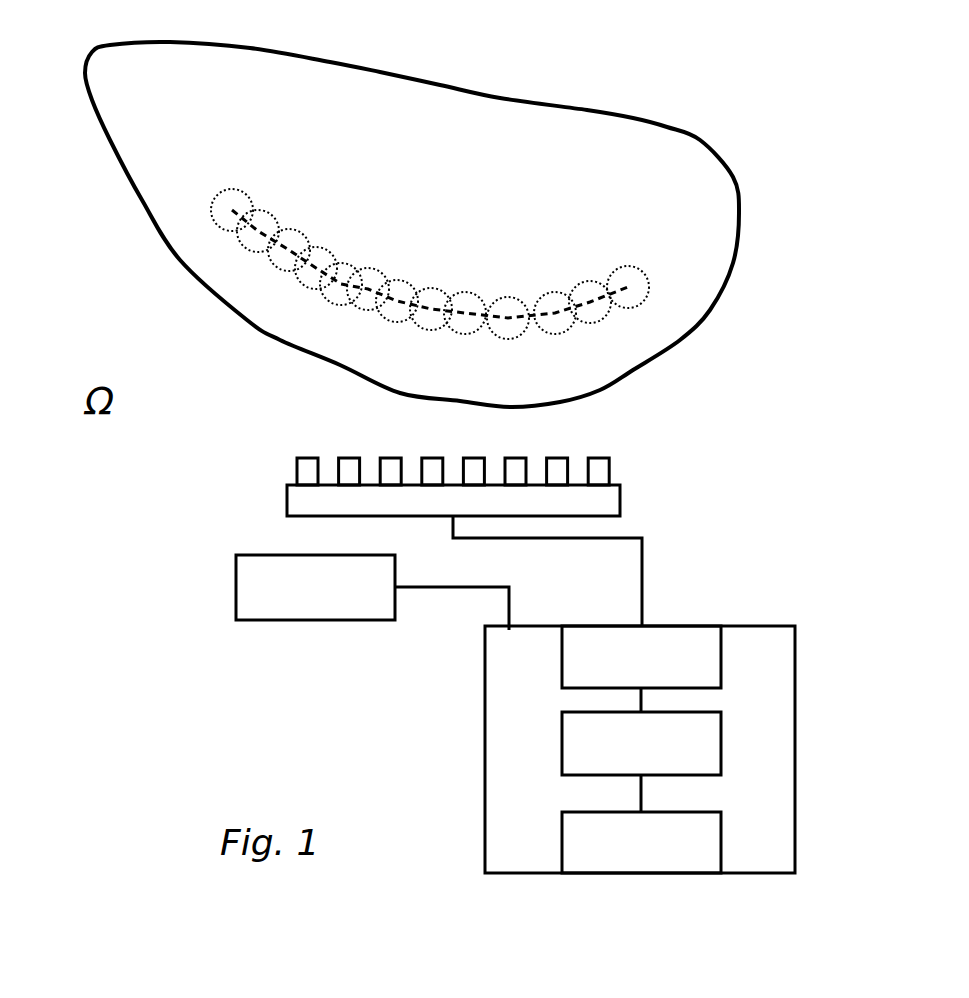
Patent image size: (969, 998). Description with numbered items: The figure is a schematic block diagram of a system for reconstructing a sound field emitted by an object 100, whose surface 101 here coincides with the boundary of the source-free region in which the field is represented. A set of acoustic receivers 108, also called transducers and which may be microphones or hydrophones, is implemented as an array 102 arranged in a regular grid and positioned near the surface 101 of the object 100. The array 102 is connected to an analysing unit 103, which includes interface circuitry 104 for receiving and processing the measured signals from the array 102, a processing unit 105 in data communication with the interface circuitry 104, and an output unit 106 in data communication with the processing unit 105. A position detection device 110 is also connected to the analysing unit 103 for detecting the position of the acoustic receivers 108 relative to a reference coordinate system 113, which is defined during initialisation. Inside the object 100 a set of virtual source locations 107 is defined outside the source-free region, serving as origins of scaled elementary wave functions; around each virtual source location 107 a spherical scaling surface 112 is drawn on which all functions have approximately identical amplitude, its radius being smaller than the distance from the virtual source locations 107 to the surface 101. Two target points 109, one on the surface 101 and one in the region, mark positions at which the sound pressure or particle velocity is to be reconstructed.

The object 100 is at (412, 214).
The surface 101 is at (179, 335).
The array 102 is at (501, 550).
The analysing unit 103 is at (580, 749).
The interface circuitry 104 is at (641, 669).
The processing unit 105 is at (641, 762).
The output unit 106 is at (641, 842).
The virtual source locations 107 is at (397, 301).
The acoustic receivers 108 is at (423, 458).
The target point 109 is at (377, 388).
The position detection device 110 is at (372, 592).
The spherical scaling surface 112 is at (381, 314).
The coordinate system 113 is at (433, 295).